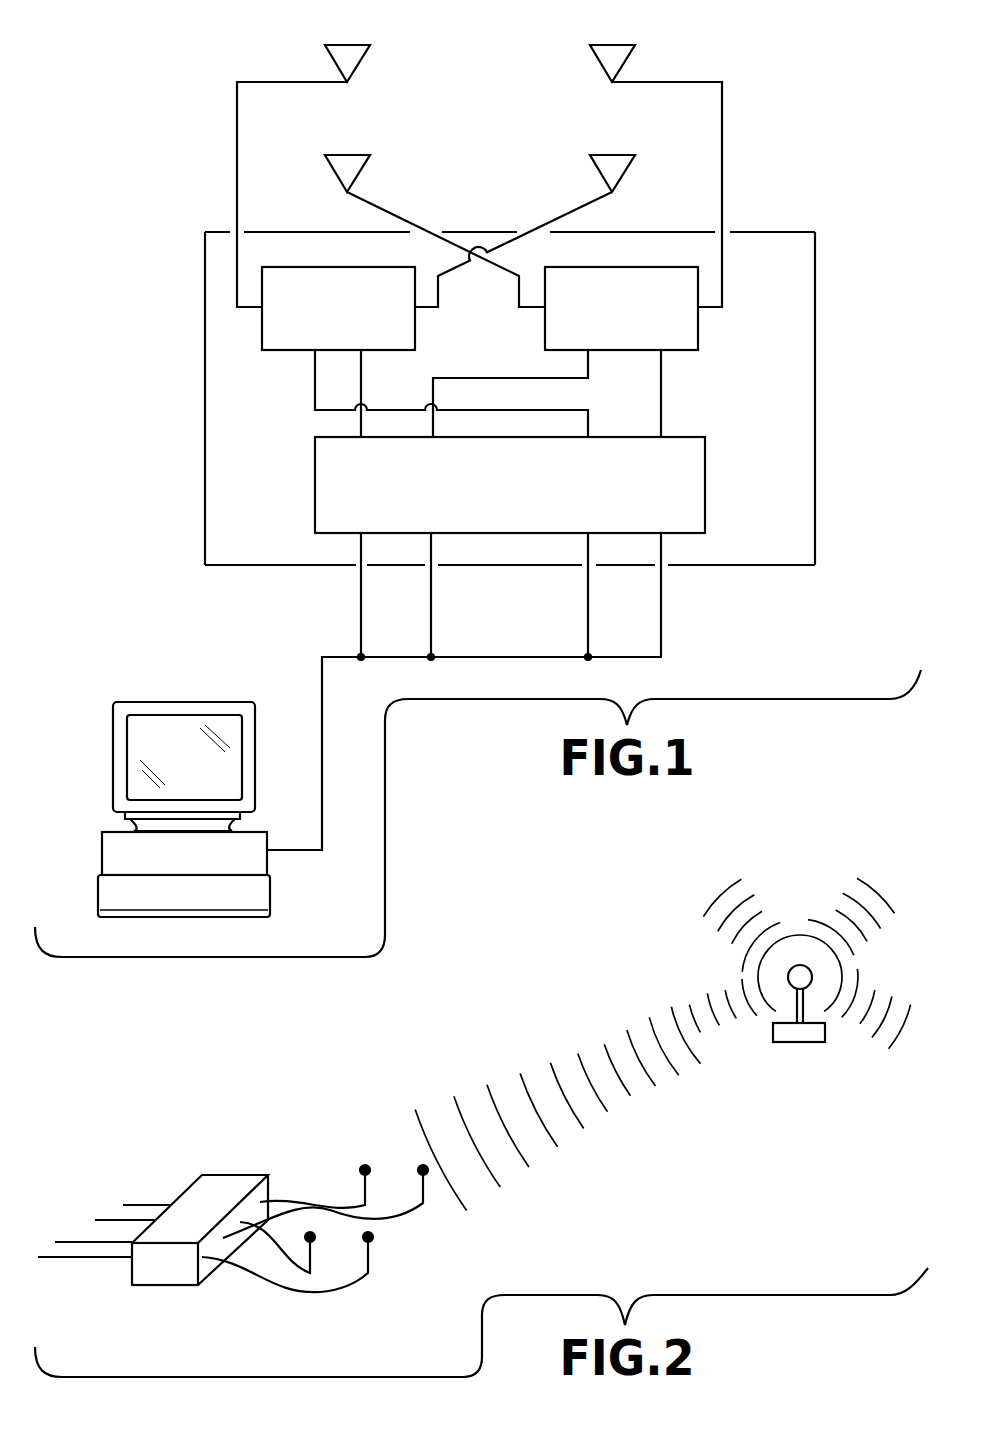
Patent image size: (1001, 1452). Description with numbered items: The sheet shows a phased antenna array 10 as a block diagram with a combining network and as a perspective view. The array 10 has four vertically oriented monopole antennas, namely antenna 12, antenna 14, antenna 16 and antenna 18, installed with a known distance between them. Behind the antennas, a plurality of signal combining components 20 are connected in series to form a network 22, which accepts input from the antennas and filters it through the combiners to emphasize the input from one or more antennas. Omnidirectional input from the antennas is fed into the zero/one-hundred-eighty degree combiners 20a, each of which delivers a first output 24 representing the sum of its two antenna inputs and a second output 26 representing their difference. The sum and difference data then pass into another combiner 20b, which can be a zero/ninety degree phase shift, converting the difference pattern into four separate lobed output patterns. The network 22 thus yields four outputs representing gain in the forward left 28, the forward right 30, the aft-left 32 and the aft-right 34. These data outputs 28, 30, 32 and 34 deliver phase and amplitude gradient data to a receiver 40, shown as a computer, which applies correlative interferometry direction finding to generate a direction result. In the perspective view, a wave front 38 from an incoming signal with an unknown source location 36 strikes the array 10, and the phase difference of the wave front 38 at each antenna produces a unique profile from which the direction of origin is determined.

In FIG. 1, the phased antenna array 10 is at (752, 55).
In FIG. 1, the antenna 12 is at (347, 44).
In FIG. 2, the antenna 12 is at (420, 1185).
In FIG. 1, the antenna 14 is at (612, 44).
In FIG. 2, the antenna 14 is at (372, 1262).
In FIG. 1, the antenna 16 is at (347, 154).
In FIG. 2, the antenna 16 is at (362, 1184).
In FIG. 1, the antenna 18 is at (612, 154).
In FIG. 2, the antenna 18 is at (318, 1262).
In FIG. 1, the signal combining components 20 is at (437, 400).
In FIG. 1, the 0/180 degree combiner 20a is at (262, 330).
In FIG. 1, the 0/90 degree phase shift combiner 20b is at (315, 470).
In FIG. 1, the network 22 is at (770, 232).
In FIG. 2, the network 22 is at (236, 1176).
In FIG. 1, the first output 24 is at (315, 380).
In FIG. 1, the second output 26 is at (362, 380).
In FIG. 1, the output 28 is at (662, 605).
In FIG. 2, the output 28 is at (88, 1258).
In FIG. 1, the output 30 is at (432, 630).
In FIG. 2, the output 30 is at (95, 1220).
In FIG. 1, the output 32 is at (361, 610).
In FIG. 2, the output 32 is at (123, 1205).
In FIG. 1, the output 34 is at (588, 602).
In FIG. 2, the output 34 is at (70, 1242).
In FIG. 2, the source location 36 is at (797, 1043).
In FIG. 2, the wave front 38 is at (722, 895).
In FIG. 1, the receiver 40 is at (165, 702).